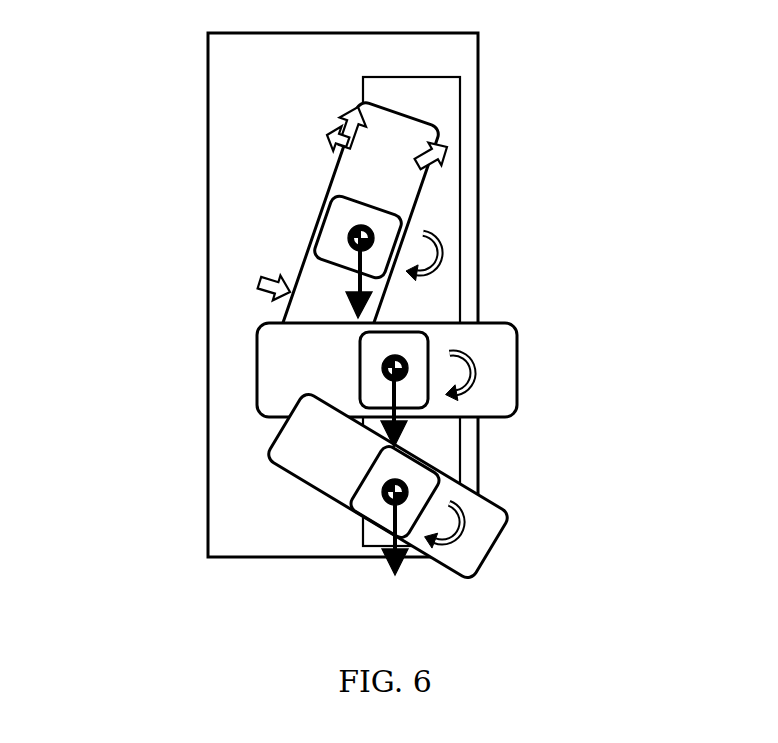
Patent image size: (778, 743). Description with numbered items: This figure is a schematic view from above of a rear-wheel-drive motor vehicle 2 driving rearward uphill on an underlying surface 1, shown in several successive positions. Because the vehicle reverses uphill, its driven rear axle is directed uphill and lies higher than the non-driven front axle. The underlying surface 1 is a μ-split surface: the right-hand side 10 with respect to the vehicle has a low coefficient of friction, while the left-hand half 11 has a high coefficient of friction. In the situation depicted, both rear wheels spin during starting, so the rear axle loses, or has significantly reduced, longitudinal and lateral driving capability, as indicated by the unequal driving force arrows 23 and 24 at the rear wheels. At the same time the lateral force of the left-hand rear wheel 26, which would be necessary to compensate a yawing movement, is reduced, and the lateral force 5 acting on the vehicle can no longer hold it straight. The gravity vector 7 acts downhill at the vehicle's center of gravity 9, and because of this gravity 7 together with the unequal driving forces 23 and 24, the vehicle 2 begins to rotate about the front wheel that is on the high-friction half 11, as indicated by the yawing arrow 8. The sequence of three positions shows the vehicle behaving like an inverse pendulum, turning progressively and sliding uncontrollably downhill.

The underlying surface 1 is at (172, 58).
The motor vehicle 2 is at (395, 128).
The lateral force 5 is at (268, 285).
The gravity vector 7 is at (357, 280).
The yawing movement arrow 8 is at (443, 236).
The center of gravity 9 is at (355, 234).
The right-hand side of the underlying surface 10 is at (451, 95).
The left-hand half of the underlying surface 11 is at (225, 145).
The driving force arrow 23 is at (350, 108).
The driving force arrow 24 is at (445, 155).
The lateral force of the left-hand rear wheel 26 is at (325, 134).